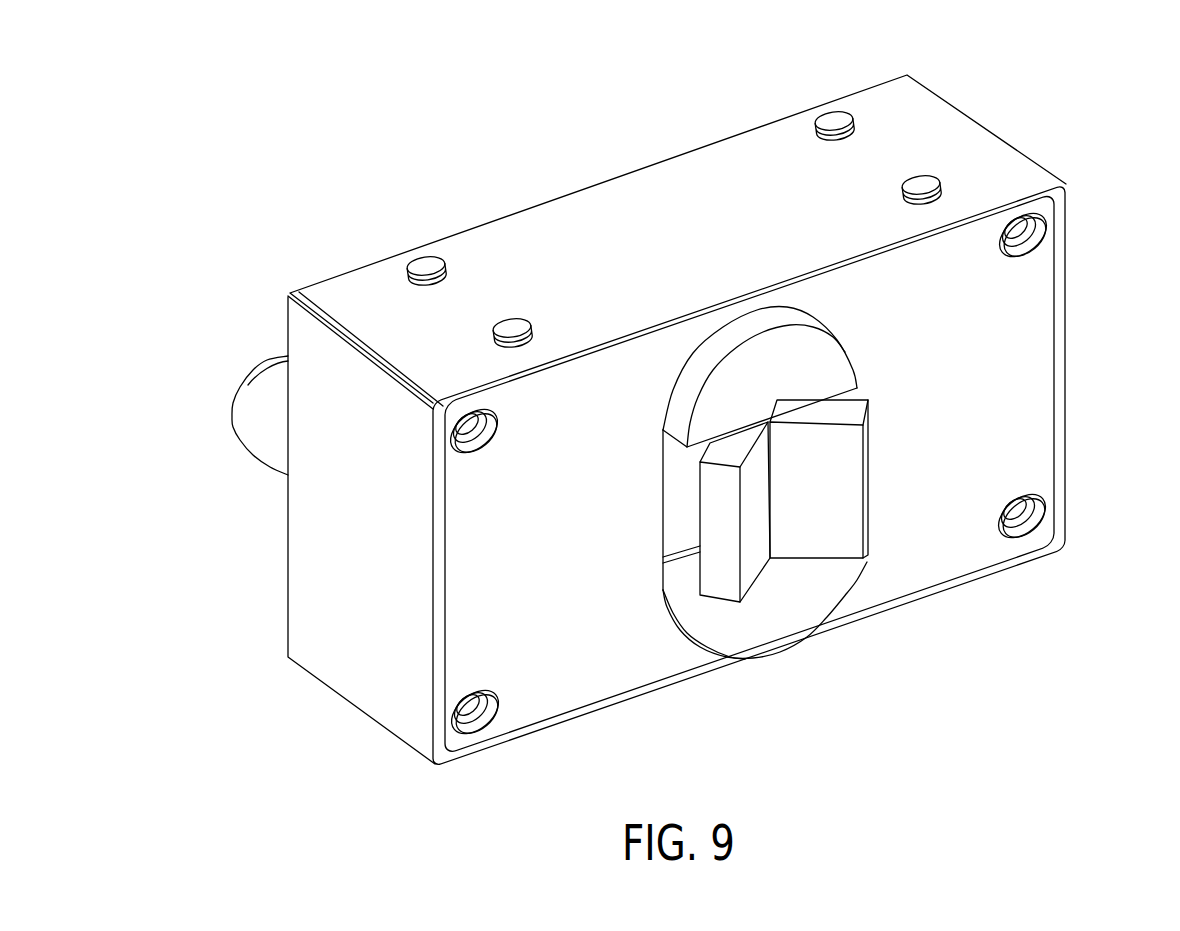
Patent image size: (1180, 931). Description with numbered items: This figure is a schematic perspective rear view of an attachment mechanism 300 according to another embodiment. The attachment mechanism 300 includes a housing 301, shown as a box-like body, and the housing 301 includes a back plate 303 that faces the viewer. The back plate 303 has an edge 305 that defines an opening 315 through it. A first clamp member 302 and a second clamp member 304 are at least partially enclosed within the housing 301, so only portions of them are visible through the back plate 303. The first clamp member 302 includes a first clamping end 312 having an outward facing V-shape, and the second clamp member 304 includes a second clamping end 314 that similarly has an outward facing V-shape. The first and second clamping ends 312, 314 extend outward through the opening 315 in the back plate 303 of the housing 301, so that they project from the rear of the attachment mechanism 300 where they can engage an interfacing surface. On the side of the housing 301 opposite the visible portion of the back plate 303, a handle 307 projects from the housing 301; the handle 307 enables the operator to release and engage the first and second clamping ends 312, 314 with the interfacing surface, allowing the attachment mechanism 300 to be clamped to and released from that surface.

The attachment mechanism 300 is at (1112, 98).
The housing 301 is at (628, 200).
The first clamp member 302 is at (715, 632).
The back plate 303 is at (935, 523).
The second clamp member 304 is at (905, 441).
The edge 305 is at (663, 512).
The handle 307 is at (253, 407).
The first clamping end 312 is at (728, 582).
The second clamping end 314 is at (828, 542).
The opening 315 is at (679, 567).